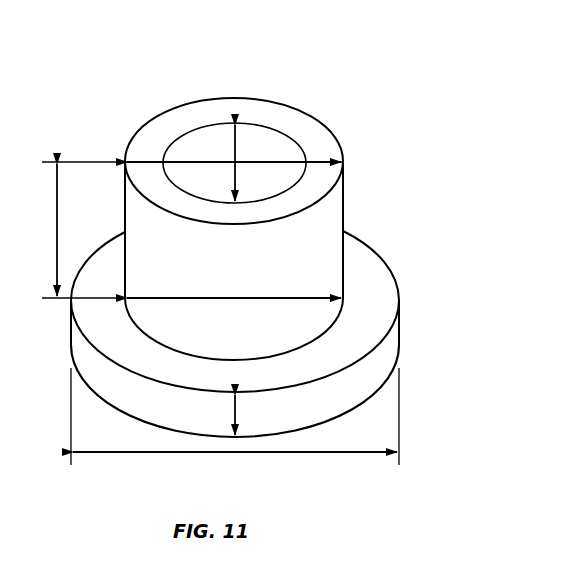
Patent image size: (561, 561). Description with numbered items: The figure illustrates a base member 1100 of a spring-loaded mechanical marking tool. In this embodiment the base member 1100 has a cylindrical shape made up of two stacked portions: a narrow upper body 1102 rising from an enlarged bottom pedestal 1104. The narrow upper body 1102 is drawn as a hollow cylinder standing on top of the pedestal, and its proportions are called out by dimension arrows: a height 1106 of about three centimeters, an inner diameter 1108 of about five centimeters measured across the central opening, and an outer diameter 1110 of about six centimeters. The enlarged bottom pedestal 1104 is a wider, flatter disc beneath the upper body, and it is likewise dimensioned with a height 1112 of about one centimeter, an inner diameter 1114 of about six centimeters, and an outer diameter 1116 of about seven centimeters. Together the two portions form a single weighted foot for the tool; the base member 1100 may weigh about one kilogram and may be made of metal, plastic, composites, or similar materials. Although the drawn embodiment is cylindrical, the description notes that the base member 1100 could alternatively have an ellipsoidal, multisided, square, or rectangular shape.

The base member 1100 is at (170, 48).
The narrow upper body 1102 is at (347, 178).
The enlarged bottom pedestal 1104 is at (400, 300).
The height 1106 is at (56, 200).
The inner diameter 1108 is at (232, 153).
The outer diameter 1110 is at (257, 160).
The height 1112 is at (230, 420).
The inner diameter 1114 is at (290, 297).
The outer diameter 1116 is at (125, 455).